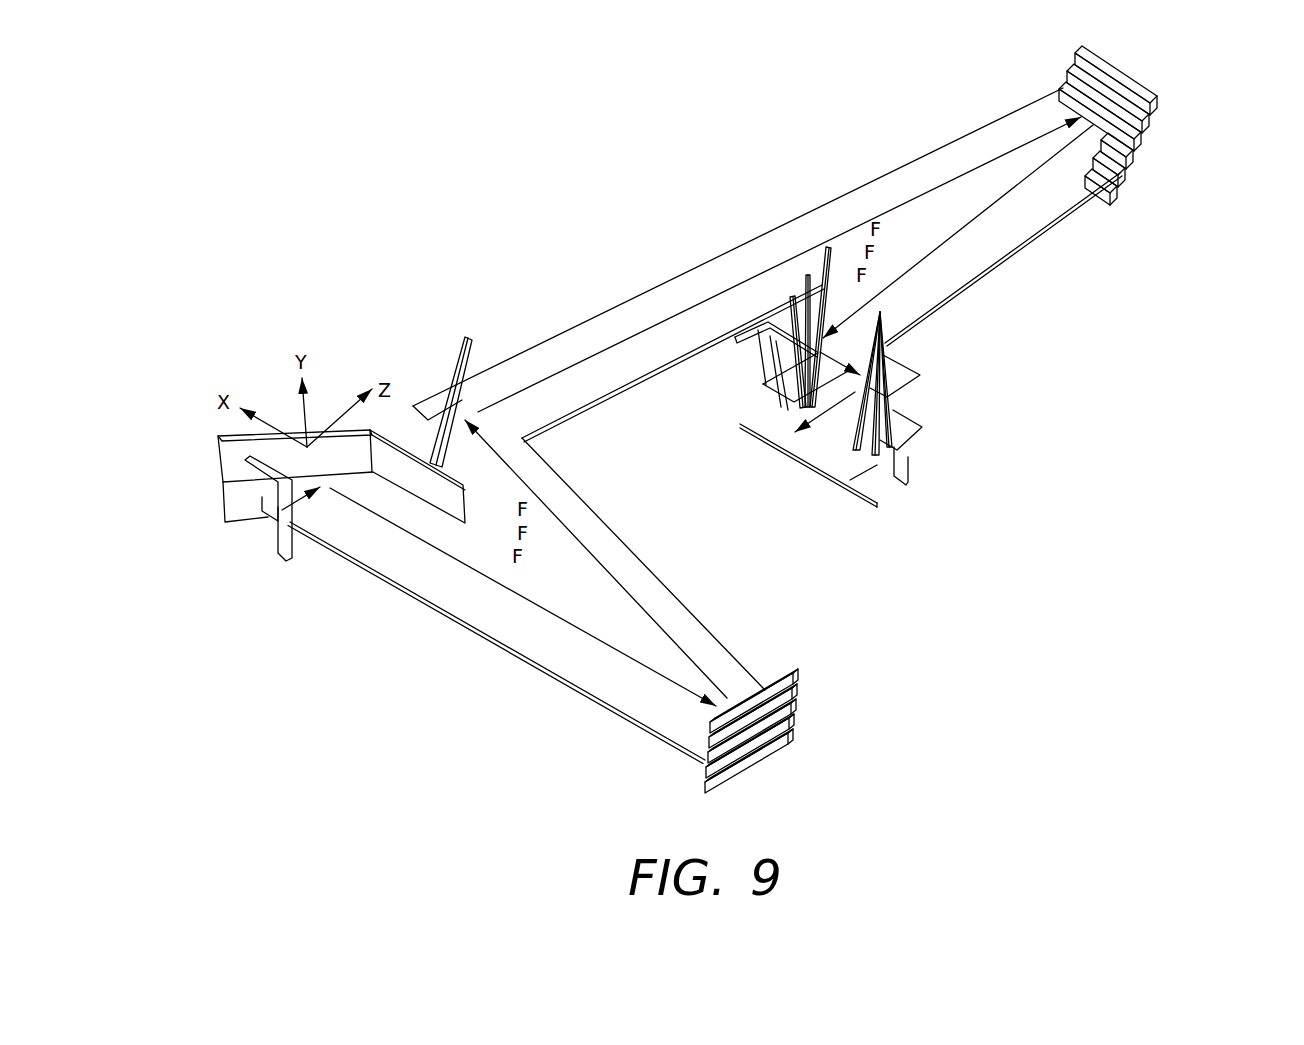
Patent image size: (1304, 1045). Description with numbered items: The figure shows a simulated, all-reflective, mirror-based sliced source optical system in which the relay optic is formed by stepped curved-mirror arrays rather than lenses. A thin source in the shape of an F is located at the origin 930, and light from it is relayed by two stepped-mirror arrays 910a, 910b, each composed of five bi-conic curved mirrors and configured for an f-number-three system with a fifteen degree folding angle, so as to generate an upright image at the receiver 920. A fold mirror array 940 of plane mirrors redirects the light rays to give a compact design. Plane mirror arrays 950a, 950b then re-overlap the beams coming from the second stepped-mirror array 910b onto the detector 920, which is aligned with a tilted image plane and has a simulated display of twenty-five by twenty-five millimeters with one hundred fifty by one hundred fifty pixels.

The stepped curved-mirror array 910a is at (798, 675).
The stepped curved-mirror array 910b is at (1157, 100).
The receiver 920 is at (740, 425).
The origin 930 is at (274, 522).
The fold mirror array 940 is at (465, 337).
The plane mirror array 950a is at (827, 246).
The plane mirror array 950b is at (887, 373).